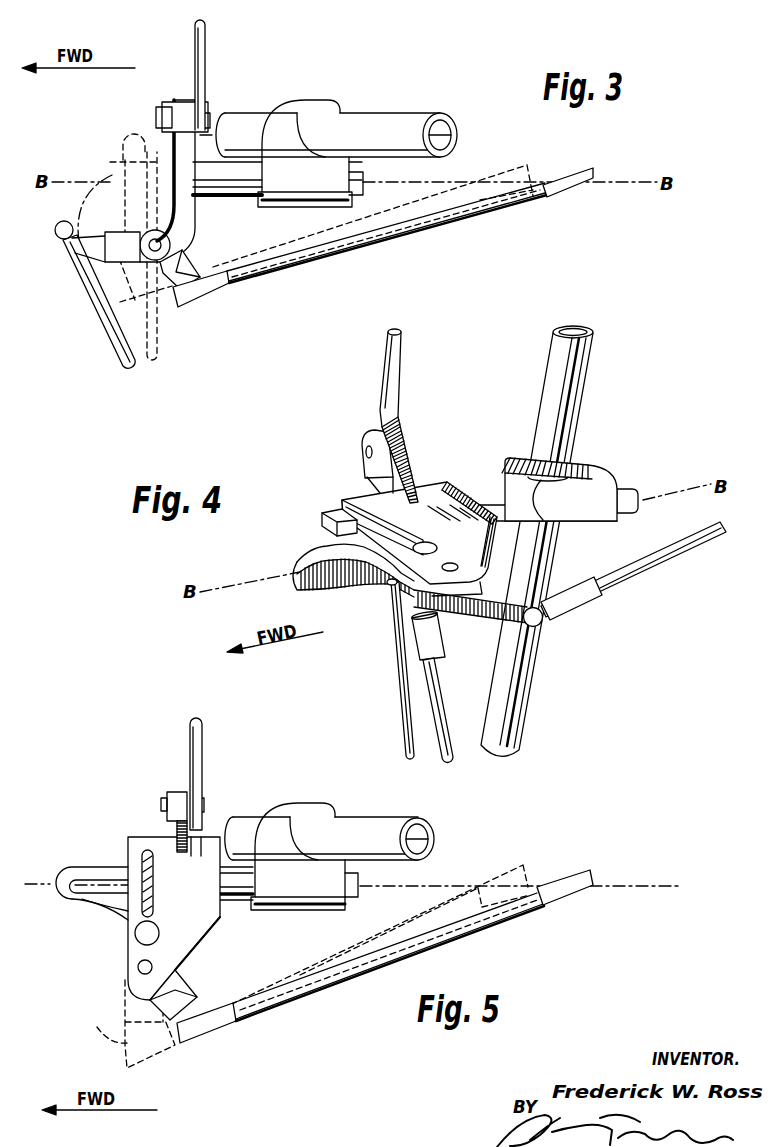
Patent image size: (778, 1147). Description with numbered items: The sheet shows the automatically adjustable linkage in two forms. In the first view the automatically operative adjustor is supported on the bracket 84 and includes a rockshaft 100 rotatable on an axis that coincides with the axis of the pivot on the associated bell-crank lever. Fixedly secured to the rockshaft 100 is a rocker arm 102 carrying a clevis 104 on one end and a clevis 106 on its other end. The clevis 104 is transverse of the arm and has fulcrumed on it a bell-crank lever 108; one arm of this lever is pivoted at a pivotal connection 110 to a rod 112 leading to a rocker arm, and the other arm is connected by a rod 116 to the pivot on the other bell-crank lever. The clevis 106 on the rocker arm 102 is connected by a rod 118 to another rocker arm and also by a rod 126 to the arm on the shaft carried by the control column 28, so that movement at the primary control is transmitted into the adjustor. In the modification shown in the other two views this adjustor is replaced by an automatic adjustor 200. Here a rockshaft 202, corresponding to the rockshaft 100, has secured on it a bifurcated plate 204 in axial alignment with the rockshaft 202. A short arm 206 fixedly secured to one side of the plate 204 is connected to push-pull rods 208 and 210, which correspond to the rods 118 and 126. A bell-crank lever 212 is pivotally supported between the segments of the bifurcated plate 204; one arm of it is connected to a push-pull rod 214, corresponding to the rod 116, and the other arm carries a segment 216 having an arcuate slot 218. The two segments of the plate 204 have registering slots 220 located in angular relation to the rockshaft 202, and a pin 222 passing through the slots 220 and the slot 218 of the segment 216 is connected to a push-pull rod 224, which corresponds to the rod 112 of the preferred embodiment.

In FIG. 3, the control column 28 is at (356, 118).
In FIG. 3, the bracket 84 is at (278, 207).
In FIG. 3, the rockshaft 100 is at (212, 196).
In FIG. 3, the rocker arm 102 is at (180, 153).
In FIG. 3, the clevis 104 is at (170, 247).
In FIG. 3, the clevis 106 is at (208, 118).
In FIG. 3, the bell-crank lever 108 is at (185, 260).
In FIG. 3, the pivotal connection 110 is at (80, 244).
In FIG. 3, the rod 112 is at (112, 337).
In FIG. 3, the rod 116 is at (377, 247).
In FIG. 3, the rod 118 is at (166, 146).
In FIG. 3, the rod 126 is at (207, 66).
In FIG. 4, the automatic adjustor 200 is at (449, 486).
In FIG. 5, the automatic adjustor 200 is at (209, 838).
In FIG. 4, the rockshaft 202 is at (500, 515).
In FIG. 5, the rockshaft 202 is at (237, 902).
In FIG. 4, the bifurcated plate 204 is at (338, 513).
In FIG. 5, the bifurcated plate 204 is at (209, 934).
In FIG. 4, the short arm 206 is at (412, 475).
In FIG. 5, the short arm 206 is at (182, 791).
In FIG. 4, the push-pull rod 208 is at (372, 479).
In FIG. 5, the push-pull rod 208 is at (167, 797).
In FIG. 4, the push-pull rod 210 is at (400, 392).
In FIG. 5, the push-pull rod 210 is at (204, 769).
In FIG. 4, the bell-crank lever 212 is at (487, 613).
In FIG. 5, the bell-crank lever 212 is at (143, 1002).
In FIG. 4, the push-pull rod 214 is at (641, 574).
In FIG. 5, the push-pull rod 214 is at (468, 933).
In FIG. 4, the segment 216 is at (323, 549).
In FIG. 5, the segment 216 is at (80, 866).
In FIG. 4, the arcuate slot 218 is at (306, 565).
In FIG. 5, the arcuate slot 218 is at (83, 890).
In FIG. 4, the registering slots 220 is at (360, 508).
In FIG. 5, the registering slots 220 is at (140, 853).
In FIG. 4, the pin 222 is at (388, 583).
In FIG. 5, the pin 222 is at (137, 938).
In FIG. 4, the push-pull rod 224 is at (444, 702).